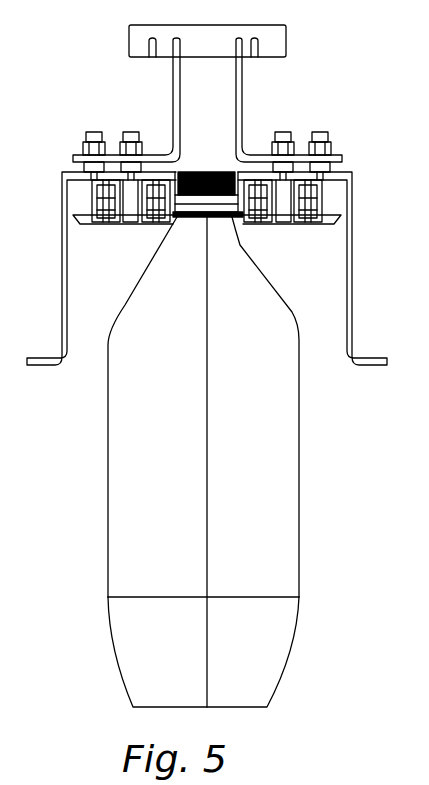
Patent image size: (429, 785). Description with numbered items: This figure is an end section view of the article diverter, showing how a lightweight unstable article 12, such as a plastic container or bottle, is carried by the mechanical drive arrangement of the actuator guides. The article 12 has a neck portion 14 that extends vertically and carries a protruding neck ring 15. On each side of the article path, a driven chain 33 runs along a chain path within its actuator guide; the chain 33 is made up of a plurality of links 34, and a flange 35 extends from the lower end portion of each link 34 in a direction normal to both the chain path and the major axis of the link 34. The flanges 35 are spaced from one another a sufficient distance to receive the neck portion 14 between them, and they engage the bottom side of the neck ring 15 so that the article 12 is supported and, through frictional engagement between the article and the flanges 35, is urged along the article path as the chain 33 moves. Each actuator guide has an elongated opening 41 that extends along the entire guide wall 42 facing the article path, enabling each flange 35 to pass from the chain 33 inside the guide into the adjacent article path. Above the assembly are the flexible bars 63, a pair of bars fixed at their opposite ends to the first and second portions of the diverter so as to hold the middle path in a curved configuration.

The article 12 is at (300, 480).
The neck portion 14 is at (233, 170).
The neck ring 15 is at (193, 217).
The driven chain 33 is at (248, 190).
The link 34 is at (267, 224).
The flange 35 is at (237, 244).
The elongated opening 41 is at (175, 218).
The guide wall 42 is at (183, 170).
The flexible bar 63 is at (173, 84).